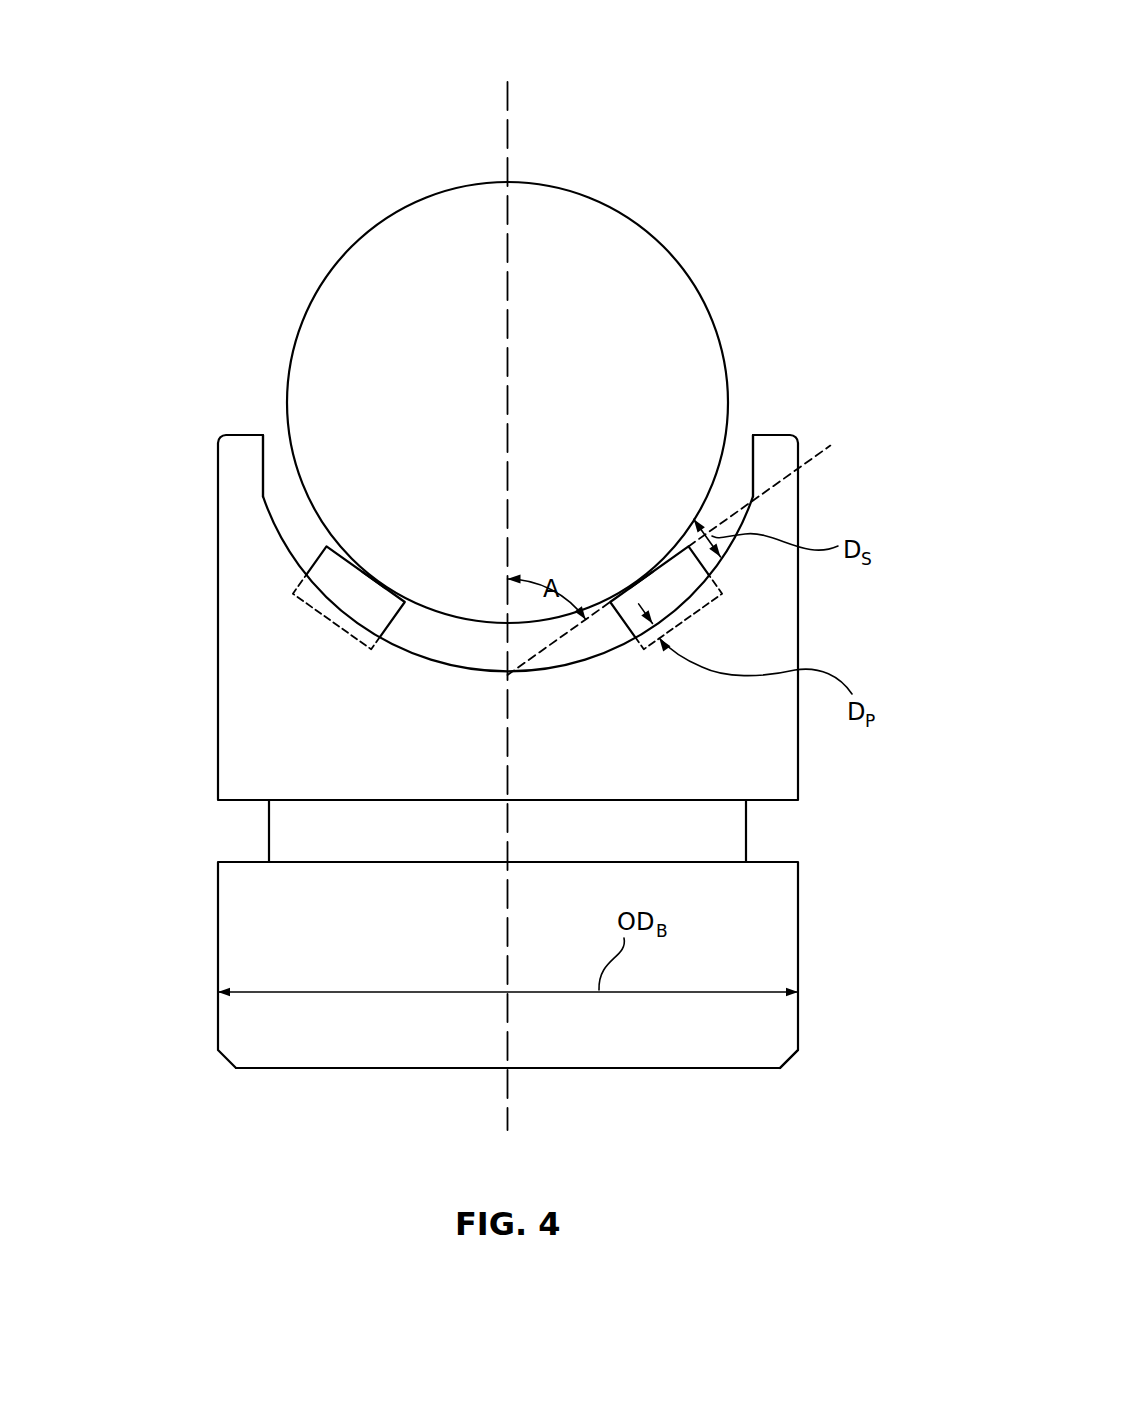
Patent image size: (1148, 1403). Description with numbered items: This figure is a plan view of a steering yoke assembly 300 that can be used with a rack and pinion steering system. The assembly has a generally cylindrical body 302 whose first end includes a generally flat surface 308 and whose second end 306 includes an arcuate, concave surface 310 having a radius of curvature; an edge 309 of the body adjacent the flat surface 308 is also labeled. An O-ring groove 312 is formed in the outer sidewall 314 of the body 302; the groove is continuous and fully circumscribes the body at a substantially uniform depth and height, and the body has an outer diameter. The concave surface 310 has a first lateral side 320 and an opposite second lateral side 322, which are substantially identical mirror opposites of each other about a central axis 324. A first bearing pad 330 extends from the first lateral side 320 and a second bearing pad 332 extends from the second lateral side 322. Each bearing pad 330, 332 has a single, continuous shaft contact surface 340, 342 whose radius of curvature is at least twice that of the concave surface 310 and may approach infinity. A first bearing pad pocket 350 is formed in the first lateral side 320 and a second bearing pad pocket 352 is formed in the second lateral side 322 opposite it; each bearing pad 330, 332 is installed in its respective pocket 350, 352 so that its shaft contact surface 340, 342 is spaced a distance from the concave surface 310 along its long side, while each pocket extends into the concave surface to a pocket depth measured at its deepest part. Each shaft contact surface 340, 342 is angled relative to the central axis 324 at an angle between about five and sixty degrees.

The steering yoke assembly 300 is at (758, 52).
The body 302 is at (768, 755).
The second end 306 is at (783, 477).
The flat surface 308 is at (686, 1068).
The chamfer 309 is at (768, 1035).
The concave surface 310 is at (737, 473).
The O-ring groove 312 is at (285, 838).
The outer sidewall 314 is at (217, 918).
The first lateral side 320 is at (746, 508).
The second lateral side 322 is at (278, 473).
The central axis 324 is at (510, 90).
The first bearing pad 330 is at (673, 590).
The second bearing pad 332 is at (284, 533).
The shaft contact surface 340 is at (641, 580).
The shaft contact surface 342 is at (374, 580).
The first bearing pad pocket 350 is at (690, 612).
The second bearing pad pocket 352 is at (333, 608).